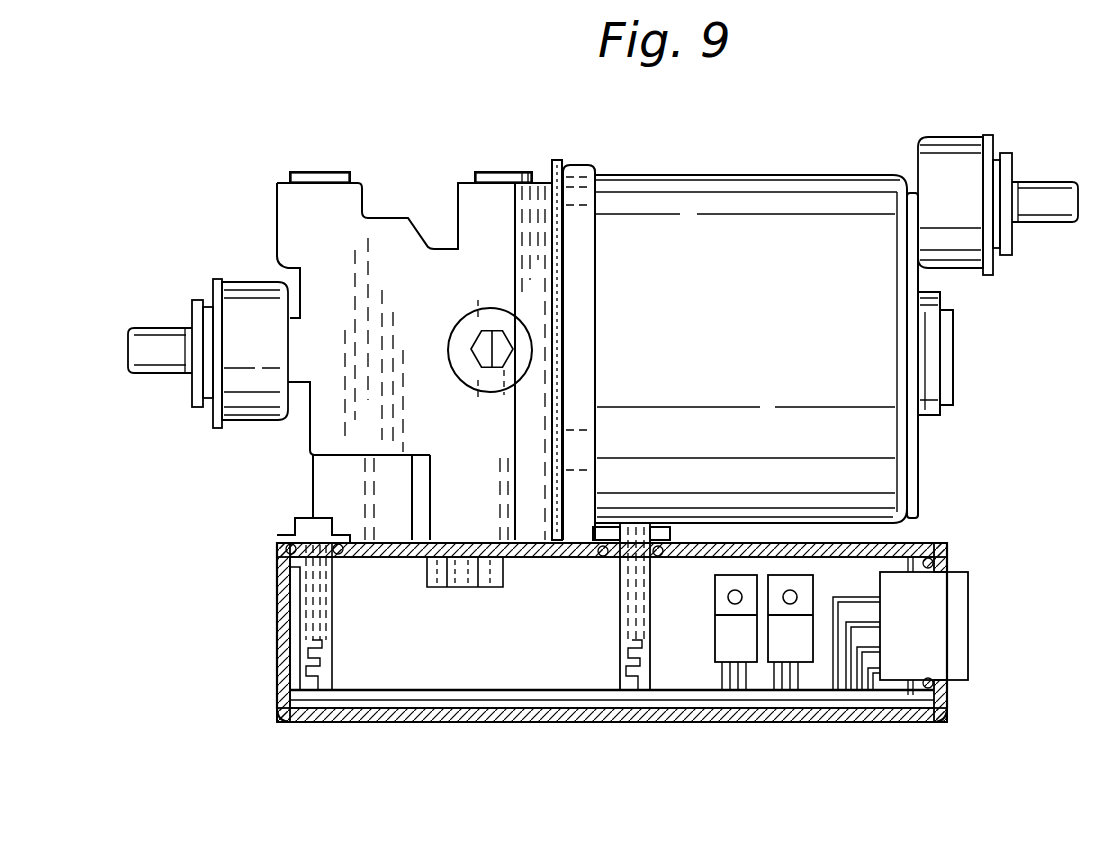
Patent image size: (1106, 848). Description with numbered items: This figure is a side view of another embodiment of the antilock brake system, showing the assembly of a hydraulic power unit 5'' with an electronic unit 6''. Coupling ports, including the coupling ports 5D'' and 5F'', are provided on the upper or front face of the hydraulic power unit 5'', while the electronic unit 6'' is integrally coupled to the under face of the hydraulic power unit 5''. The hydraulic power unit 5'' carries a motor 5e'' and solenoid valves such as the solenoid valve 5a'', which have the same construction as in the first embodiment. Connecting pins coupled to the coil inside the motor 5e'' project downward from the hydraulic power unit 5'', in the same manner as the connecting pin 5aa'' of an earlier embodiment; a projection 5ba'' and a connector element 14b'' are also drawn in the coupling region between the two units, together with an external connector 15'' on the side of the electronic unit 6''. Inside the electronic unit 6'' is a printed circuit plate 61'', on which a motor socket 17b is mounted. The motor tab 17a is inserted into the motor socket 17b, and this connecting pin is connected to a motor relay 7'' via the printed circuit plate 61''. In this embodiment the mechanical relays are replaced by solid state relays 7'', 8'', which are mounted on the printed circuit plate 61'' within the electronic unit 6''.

The hydraulic power unit 5'' is at (364, 322).
The coupling port 5D'' is at (320, 143).
The coupling port 5F'' is at (769, 175).
The motor 5e'' is at (758, 326).
The solenoid valve 5a'' is at (407, 475).
The projection of body 5ba'' is at (272, 509).
The connecting pin 5aa'' is at (240, 632).
The connector terminal 14b'' is at (268, 616).
The motor tab 17a is at (632, 596).
The motor socket 17b is at (622, 655).
The external connector 15'' is at (938, 628).
The electronic unit 6'' is at (604, 663).
The printed circuit plate 61'' is at (612, 726).
The motor relay 7'' is at (702, 671).
The solid state relay 8'' is at (767, 673).